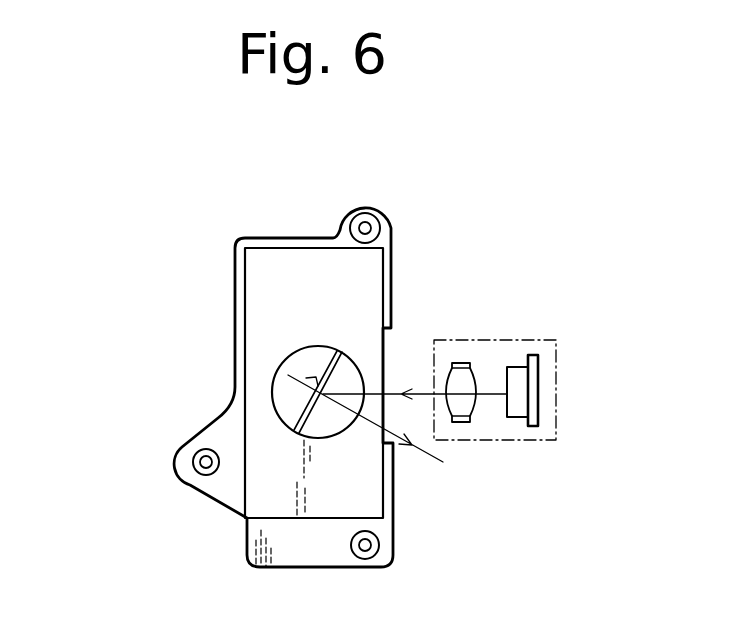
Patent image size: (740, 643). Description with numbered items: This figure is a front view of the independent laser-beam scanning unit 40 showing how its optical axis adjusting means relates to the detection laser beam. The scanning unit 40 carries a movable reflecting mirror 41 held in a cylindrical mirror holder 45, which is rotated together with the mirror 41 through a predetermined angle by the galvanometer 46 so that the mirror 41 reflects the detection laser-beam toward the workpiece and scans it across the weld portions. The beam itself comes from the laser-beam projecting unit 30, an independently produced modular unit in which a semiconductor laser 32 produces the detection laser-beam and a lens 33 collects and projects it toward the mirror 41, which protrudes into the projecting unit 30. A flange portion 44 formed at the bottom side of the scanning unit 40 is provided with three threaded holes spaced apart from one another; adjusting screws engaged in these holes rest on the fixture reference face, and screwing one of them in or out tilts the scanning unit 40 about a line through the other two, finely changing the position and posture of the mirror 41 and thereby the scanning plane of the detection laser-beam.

The laser-beam projecting unit 30 is at (570, 336).
The semiconductor laser 32 is at (538, 401).
The lens 33 is at (468, 405).
The laser-beam scanning unit 40 is at (260, 241).
The movable reflecting mirror 41 is at (303, 407).
The flange portion 44 is at (380, 213).
The cylindrical mirror holder 45 is at (353, 367).
The galvanometer 46 is at (260, 285).